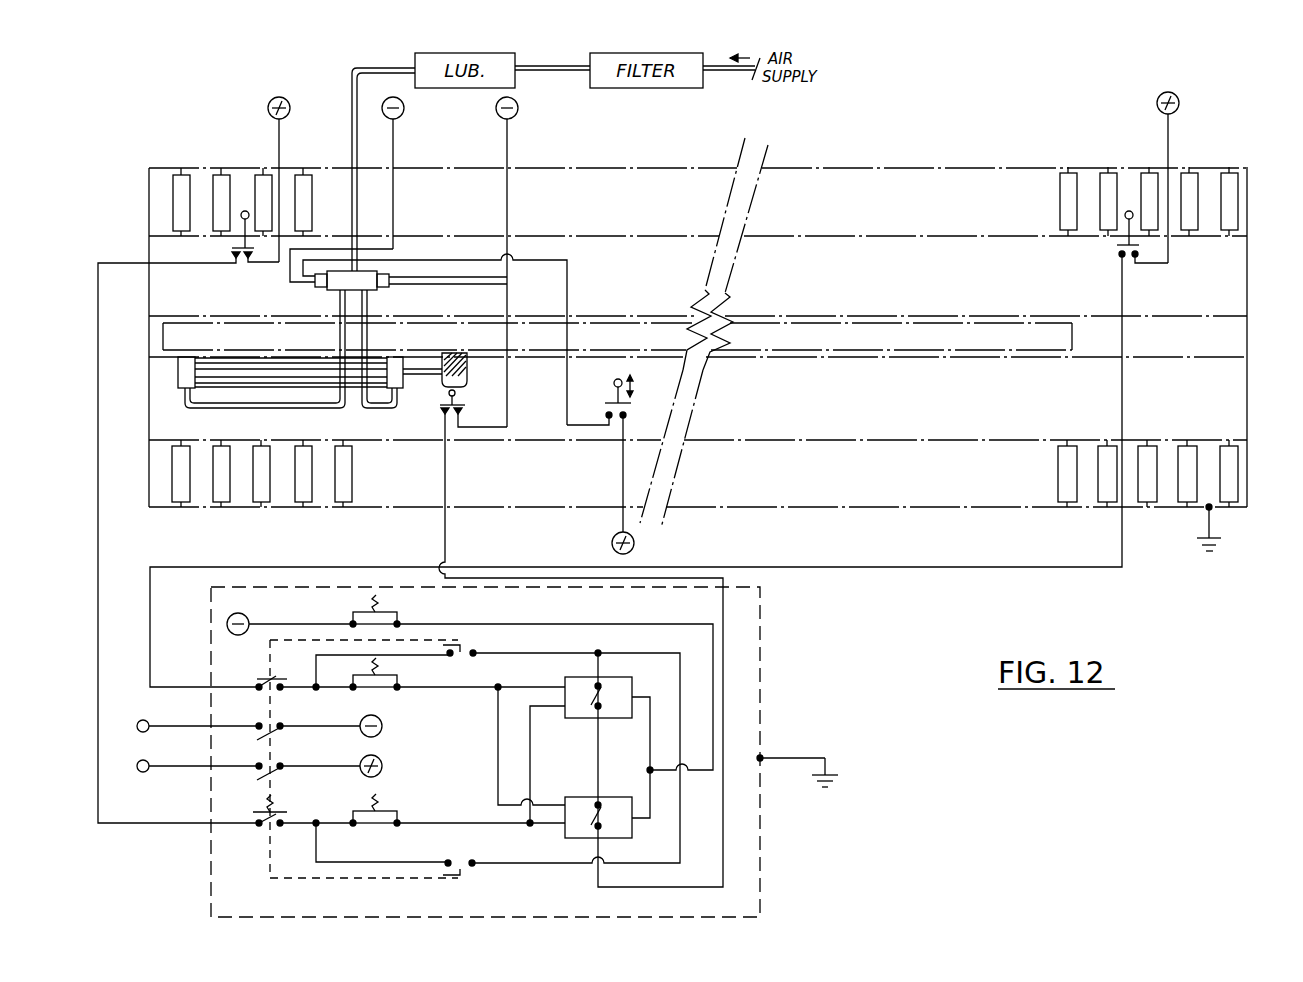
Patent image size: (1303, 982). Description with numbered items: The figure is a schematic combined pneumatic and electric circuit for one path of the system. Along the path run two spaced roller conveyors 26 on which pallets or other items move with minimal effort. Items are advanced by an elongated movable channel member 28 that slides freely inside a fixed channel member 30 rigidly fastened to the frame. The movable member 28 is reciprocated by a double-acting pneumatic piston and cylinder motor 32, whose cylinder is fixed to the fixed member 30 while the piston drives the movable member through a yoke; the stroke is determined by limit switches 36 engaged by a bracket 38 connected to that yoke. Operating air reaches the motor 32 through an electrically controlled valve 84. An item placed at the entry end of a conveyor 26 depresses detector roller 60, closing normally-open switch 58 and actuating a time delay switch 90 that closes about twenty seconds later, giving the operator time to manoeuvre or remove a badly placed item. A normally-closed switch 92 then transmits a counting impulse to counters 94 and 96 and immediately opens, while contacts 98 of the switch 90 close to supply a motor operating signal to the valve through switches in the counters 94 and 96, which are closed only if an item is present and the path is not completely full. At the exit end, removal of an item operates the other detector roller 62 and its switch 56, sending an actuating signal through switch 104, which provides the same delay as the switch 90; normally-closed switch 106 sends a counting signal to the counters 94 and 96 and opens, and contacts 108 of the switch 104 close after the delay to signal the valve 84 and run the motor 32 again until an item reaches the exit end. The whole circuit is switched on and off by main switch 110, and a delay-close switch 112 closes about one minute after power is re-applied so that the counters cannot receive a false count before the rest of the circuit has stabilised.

The roller conveyors 26 is at (921, 168).
The movable channel member 28 is at (880, 352).
The fixed channel member 30 is at (873, 316).
The pneumatic piston and cylinder motor 32 is at (285, 389).
The limit switches 36 is at (436, 418).
The bracket 38 is at (460, 388).
The switch 56 is at (1135, 268).
The switch 58 is at (242, 268).
The detector roller 60 is at (1129, 211).
The detector roller 62 is at (243, 211).
The electrically controlled valve 84 is at (333, 283).
The time delay switch 90 is at (262, 678).
The normally-closed switch 92 is at (398, 676).
The counter 94 is at (584, 719).
The counter 96 is at (584, 797).
The contacts 98 is at (472, 650).
The switch 104 is at (263, 832).
The normally-closed switch 106 is at (400, 810).
The contacts 108 is at (472, 878).
The main switch 110 is at (284, 750).
The delay-close switch 112 is at (398, 611).